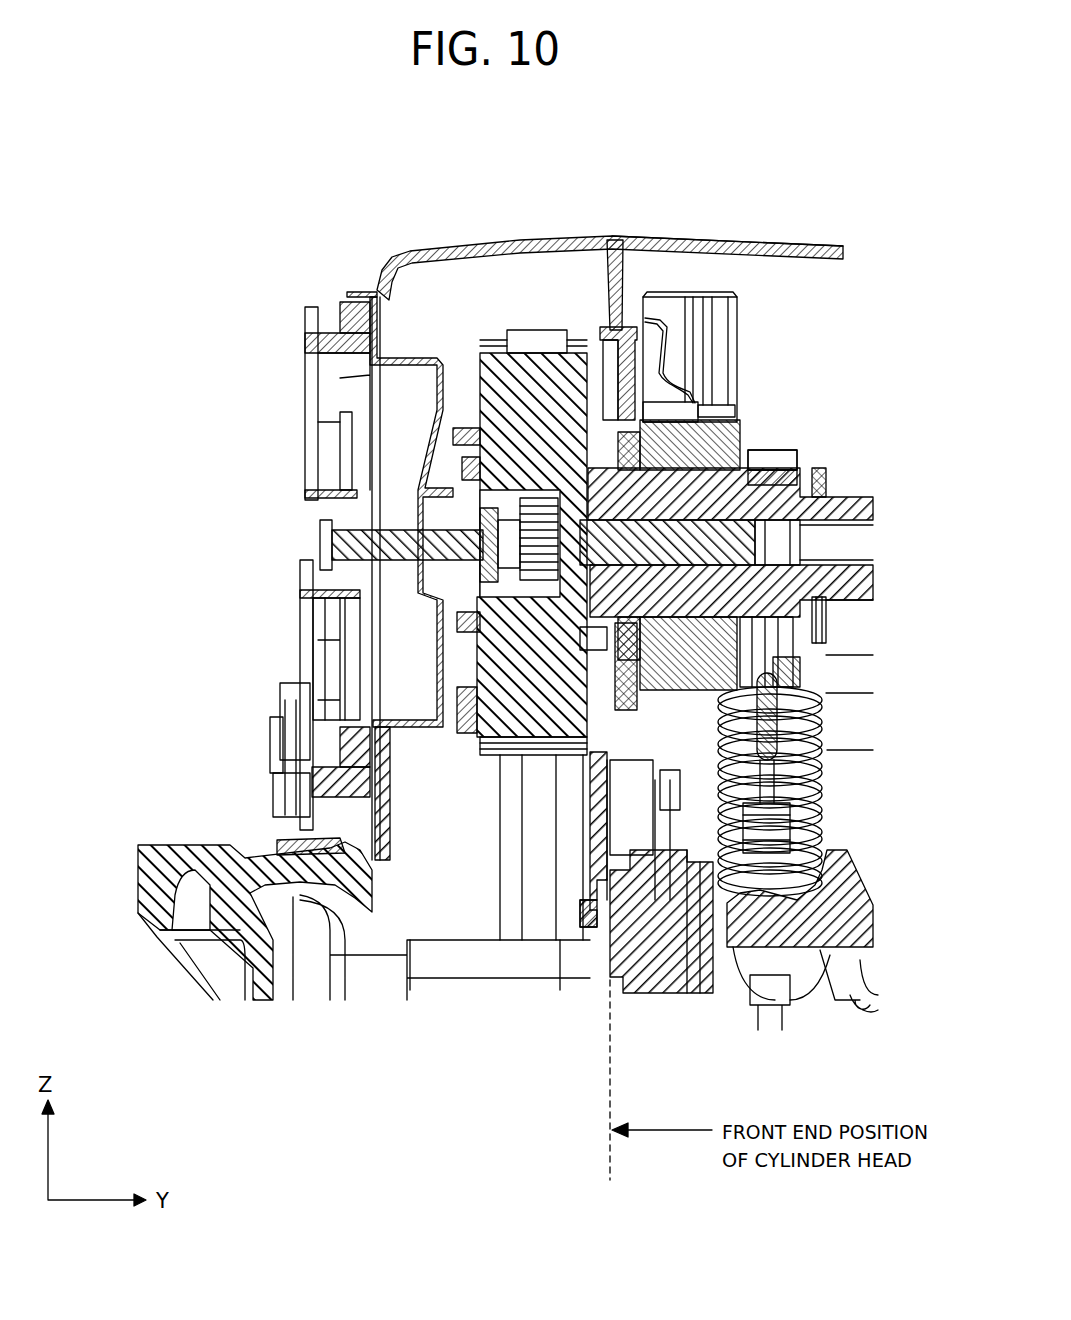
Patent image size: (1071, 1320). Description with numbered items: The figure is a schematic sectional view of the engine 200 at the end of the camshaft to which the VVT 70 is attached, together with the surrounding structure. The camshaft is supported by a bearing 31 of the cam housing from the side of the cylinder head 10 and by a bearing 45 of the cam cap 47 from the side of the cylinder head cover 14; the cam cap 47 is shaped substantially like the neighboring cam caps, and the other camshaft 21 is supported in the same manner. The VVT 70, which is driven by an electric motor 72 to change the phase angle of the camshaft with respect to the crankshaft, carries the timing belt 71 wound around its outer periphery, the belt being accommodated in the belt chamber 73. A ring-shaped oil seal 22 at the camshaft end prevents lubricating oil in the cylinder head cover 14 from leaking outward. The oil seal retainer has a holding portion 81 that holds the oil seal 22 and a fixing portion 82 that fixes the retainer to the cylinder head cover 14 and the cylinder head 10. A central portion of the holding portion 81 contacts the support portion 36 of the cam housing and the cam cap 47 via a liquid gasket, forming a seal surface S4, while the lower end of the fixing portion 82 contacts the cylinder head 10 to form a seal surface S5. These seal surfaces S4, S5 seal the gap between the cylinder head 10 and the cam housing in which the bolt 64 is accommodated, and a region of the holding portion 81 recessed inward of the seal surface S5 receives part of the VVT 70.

The cylinder head 10 is at (808, 1000).
The cylinder head cover 14 is at (755, 250).
The camshaft 21 is at (770, 460).
The oil seal 22 is at (627, 240).
The bearing 31 is at (826, 616).
The support portion 36 is at (672, 880).
The bearing 45 is at (727, 440).
The cam cap 47 is at (702, 480).
The bolt 64 is at (700, 875).
The VVT 70 is at (528, 478).
The timing belt 71 is at (545, 245).
The electric motor 72 is at (302, 390).
The belt chamber 73 is at (397, 285).
The holding portion 81 is at (628, 330).
The fixing portion 82 is at (580, 907).
The engine 200 is at (858, 218).
The seal surface S4 is at (628, 820).
The seal surface S5 is at (612, 880).